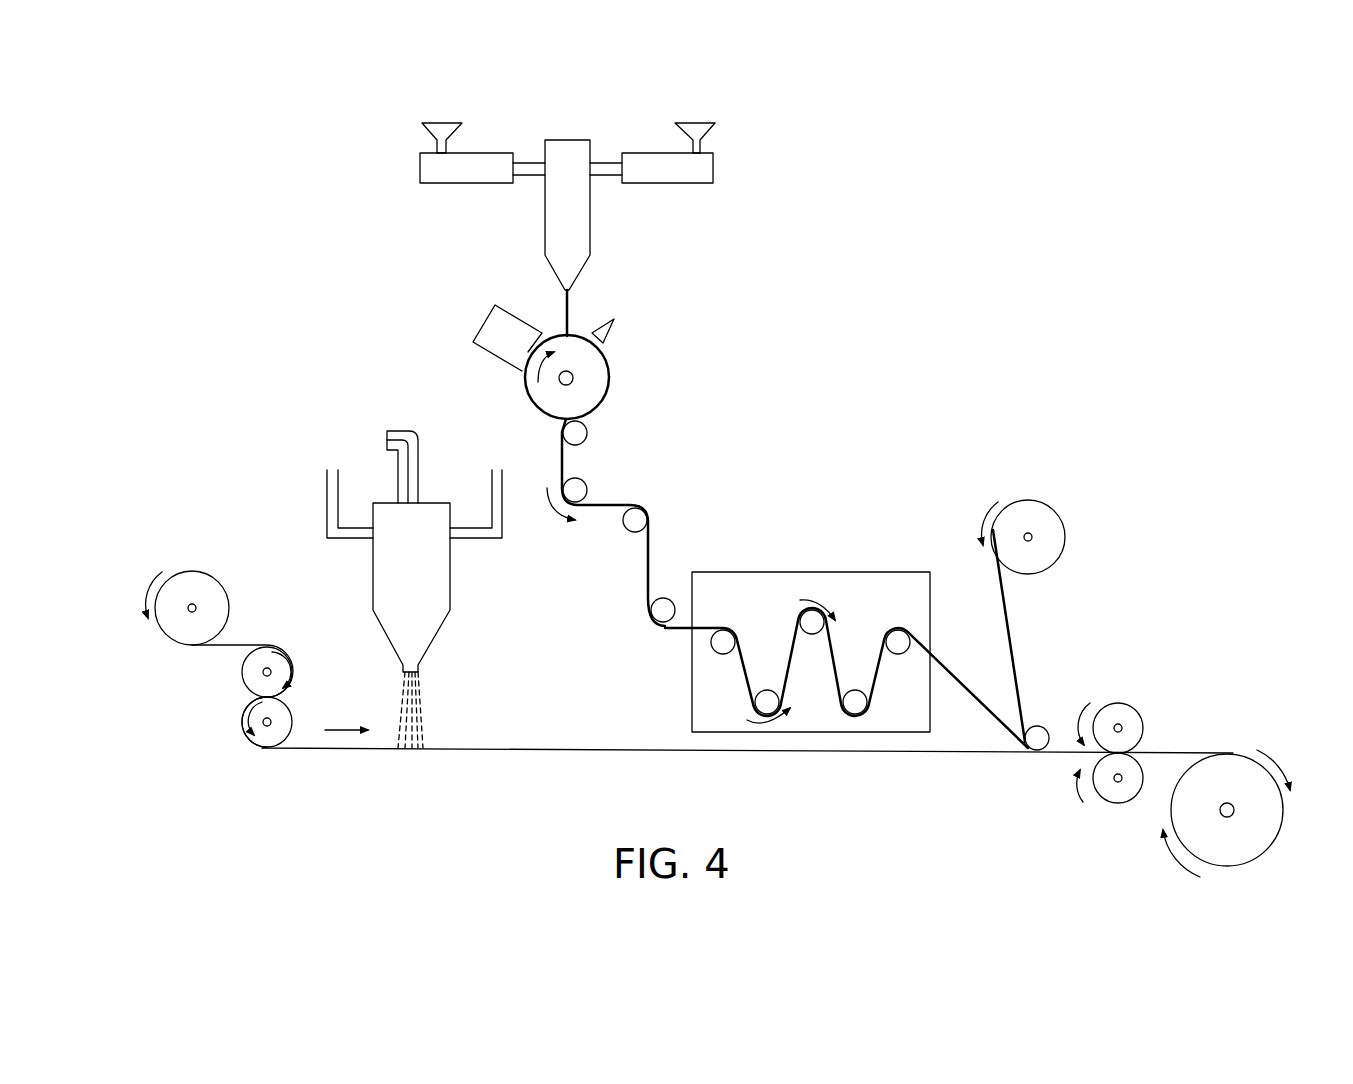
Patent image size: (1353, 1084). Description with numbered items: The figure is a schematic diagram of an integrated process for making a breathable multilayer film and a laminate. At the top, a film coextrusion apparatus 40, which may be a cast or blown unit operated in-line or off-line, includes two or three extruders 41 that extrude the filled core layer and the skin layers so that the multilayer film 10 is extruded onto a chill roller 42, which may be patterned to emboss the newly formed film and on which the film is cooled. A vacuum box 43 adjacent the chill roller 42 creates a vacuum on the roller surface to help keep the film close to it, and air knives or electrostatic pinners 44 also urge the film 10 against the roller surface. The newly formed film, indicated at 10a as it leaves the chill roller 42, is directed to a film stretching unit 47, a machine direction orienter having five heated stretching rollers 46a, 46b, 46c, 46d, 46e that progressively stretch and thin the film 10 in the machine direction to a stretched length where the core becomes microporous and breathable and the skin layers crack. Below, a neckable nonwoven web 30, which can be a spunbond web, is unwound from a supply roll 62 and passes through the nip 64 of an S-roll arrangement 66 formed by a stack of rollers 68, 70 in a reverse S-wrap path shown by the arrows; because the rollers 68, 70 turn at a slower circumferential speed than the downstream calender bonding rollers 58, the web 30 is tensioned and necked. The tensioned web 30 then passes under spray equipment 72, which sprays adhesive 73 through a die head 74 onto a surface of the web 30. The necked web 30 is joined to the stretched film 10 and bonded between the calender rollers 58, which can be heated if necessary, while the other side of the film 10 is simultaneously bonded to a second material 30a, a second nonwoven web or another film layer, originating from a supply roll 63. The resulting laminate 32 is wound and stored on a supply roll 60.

The multilayer film 10 is at (652, 552).
The extruded filament 10a is at (612, 507).
The nonwoven web 30 is at (300, 745).
The second material 30a is at (1008, 640).
The laminate 32 is at (1165, 753).
The film coextrusion apparatus 40 is at (578, 224).
The extruders 41 is at (420, 175).
The chill roller 42 is at (593, 382).
The vacuum box 43 is at (485, 325).
The air knives or electrostatic pinners 44 is at (612, 332).
The stretching roller 46a is at (728, 642).
The stretching roller 46b is at (770, 700).
The stretching roller 46c is at (812, 632).
The stretching roller 46d is at (858, 700).
The stretching roller 46e is at (903, 642).
The film stretching unit 47 is at (797, 572).
The calender bonding rollers 58 is at (1110, 712).
The supply roll 60 is at (1265, 812).
The supply roll 62 is at (190, 578).
The supply roll 63 is at (1045, 530).
The nip 64 is at (296, 693).
The S-roll arrangement 66 is at (279, 638).
The roller 68 is at (243, 672).
The roller 70 is at (243, 720).
The spray equipment 72 is at (437, 567).
The adhesive 73 is at (423, 718).
The die head 74 is at (415, 668).